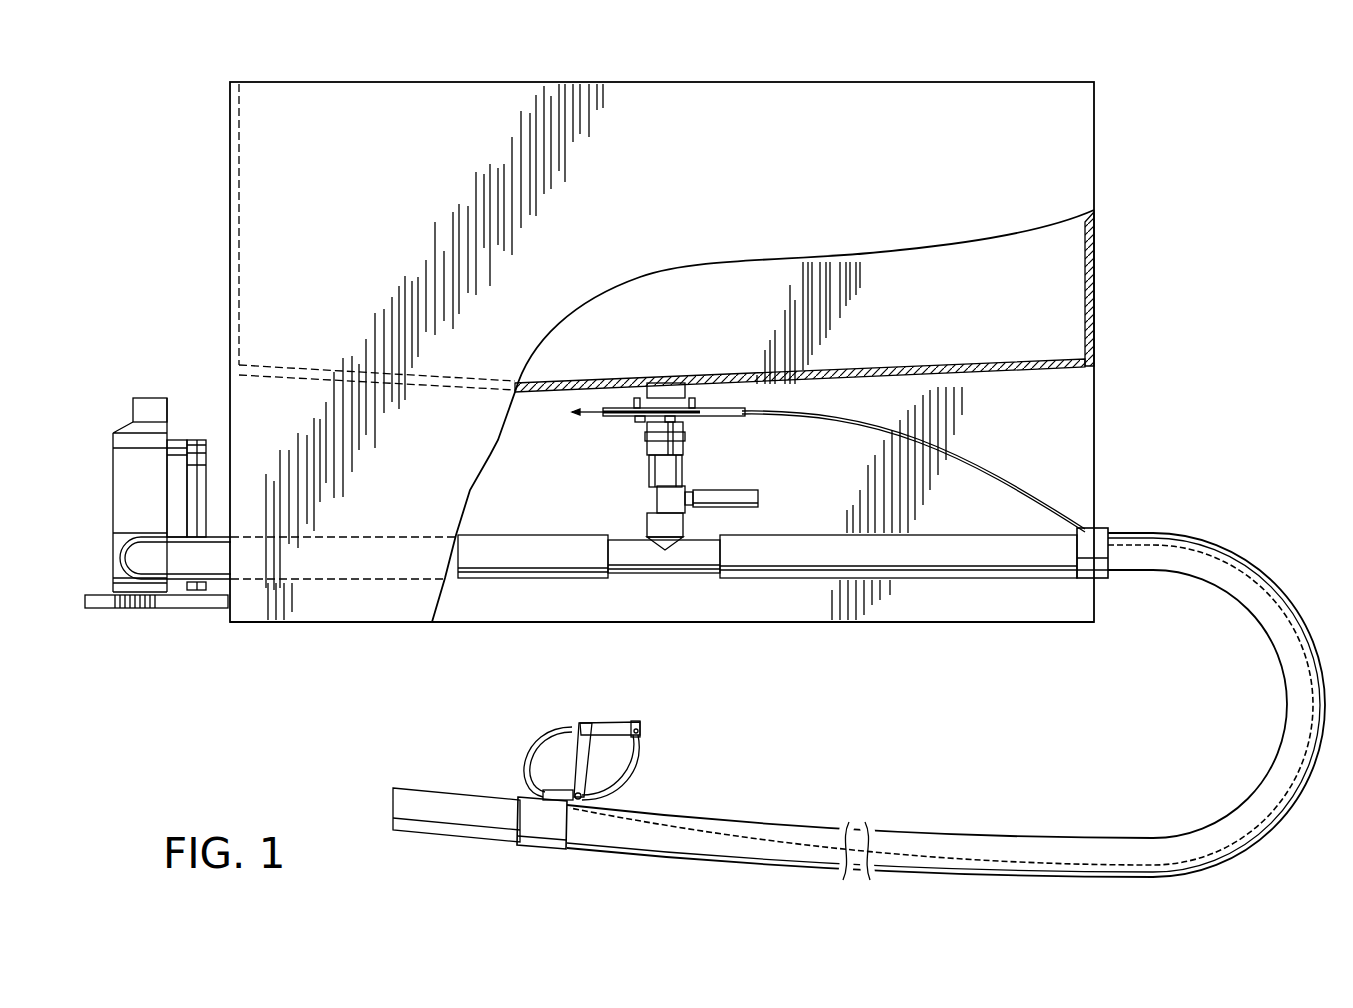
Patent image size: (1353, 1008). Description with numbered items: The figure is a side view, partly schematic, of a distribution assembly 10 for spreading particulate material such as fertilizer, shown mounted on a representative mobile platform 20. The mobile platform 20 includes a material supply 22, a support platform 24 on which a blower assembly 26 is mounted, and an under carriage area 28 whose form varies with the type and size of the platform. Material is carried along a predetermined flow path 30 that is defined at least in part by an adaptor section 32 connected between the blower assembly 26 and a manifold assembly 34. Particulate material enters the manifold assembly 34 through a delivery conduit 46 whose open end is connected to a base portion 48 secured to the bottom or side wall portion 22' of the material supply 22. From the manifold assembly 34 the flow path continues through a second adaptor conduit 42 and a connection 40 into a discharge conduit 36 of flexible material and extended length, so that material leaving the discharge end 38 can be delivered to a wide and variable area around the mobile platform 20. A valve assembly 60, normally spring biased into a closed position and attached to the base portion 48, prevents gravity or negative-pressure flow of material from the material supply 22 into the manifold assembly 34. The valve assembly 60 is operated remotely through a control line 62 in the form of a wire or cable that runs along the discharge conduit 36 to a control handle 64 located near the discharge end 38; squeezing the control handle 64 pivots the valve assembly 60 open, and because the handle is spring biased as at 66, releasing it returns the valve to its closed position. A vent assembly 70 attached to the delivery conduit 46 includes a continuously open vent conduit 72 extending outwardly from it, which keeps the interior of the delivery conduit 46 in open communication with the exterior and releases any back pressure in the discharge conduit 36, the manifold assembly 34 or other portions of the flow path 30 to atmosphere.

The distribution assembly 10 is at (207, 112).
The mobile platform 20 is at (1150, 285).
The material supply 22 is at (723, 352).
The side wall portion 22' is at (666, 238).
The support platform 24 is at (100, 610).
The blower assembly 26 is at (172, 380).
The under carriage area 28 is at (880, 598).
The predetermined flow path 30 is at (1230, 526).
The adaptor section 32 is at (462, 562).
The manifold assembly 34 is at (674, 585).
The discharge conduit 36 is at (1285, 690).
The discharge end 38 is at (395, 795).
The connection 40 is at (1100, 572).
The second adaptor conduit 42 is at (1005, 560).
The delivery conduit 46 is at (648, 455).
The base portion 48 is at (626, 406).
The valve assembly 60 is at (620, 426).
The control line 62 is at (975, 462).
The control handle 64 is at (665, 758).
The spring bias 66 is at (596, 728).
The vent assembly 70 is at (690, 478).
The vent conduit 72 is at (758, 497).